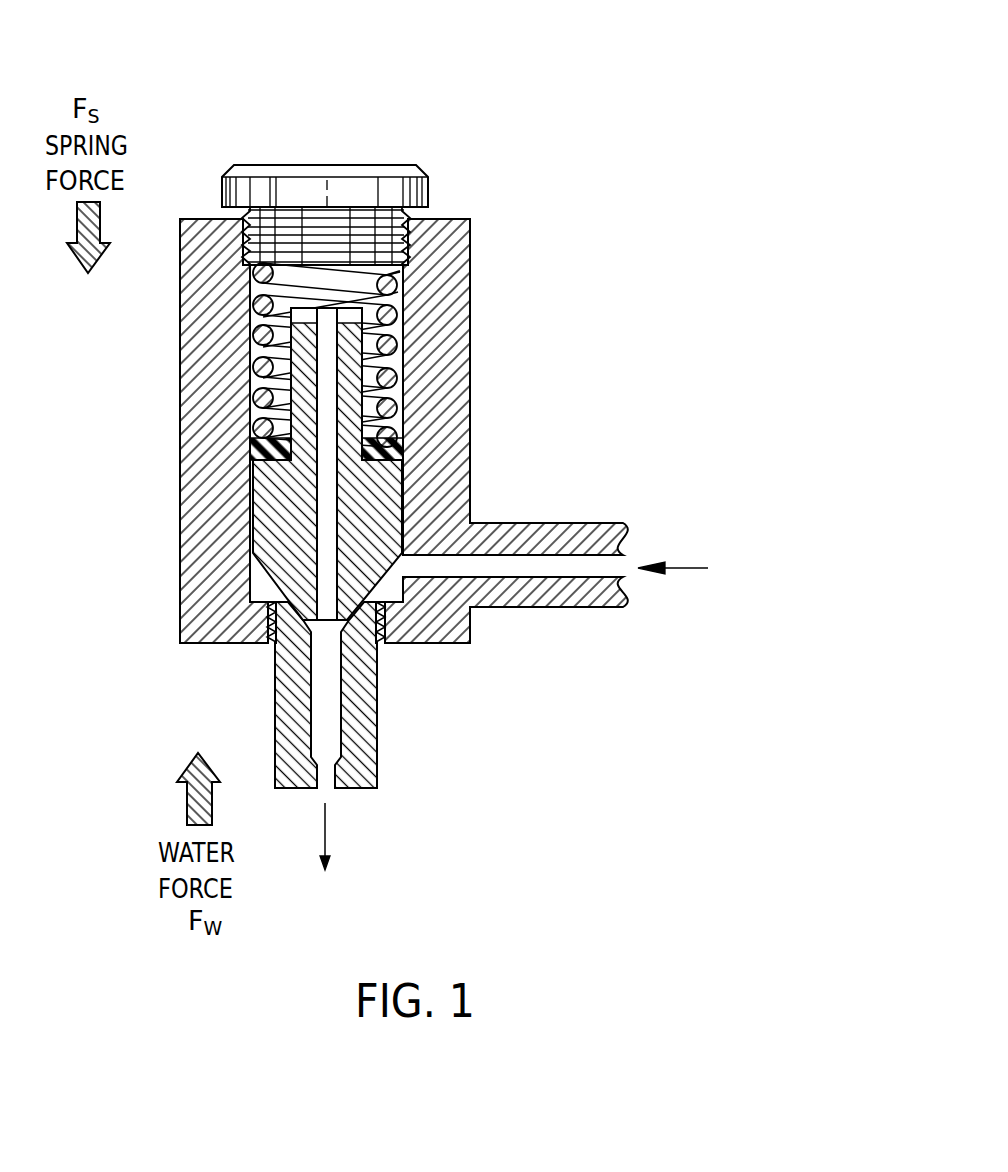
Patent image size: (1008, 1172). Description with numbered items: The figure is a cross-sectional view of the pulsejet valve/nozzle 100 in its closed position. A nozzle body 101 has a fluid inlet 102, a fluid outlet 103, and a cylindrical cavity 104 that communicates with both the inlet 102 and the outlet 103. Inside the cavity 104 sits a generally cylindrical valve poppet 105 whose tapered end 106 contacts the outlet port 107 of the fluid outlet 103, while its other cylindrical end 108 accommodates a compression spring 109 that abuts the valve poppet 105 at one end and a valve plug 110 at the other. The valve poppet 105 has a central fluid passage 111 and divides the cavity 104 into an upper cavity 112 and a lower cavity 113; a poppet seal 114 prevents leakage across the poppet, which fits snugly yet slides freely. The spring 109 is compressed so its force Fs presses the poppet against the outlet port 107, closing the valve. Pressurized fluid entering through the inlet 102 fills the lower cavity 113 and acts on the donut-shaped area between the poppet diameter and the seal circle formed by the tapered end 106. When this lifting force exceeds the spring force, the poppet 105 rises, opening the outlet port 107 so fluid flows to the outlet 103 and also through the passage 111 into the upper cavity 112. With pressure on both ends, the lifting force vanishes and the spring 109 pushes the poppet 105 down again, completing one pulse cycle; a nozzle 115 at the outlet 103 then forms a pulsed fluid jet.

The pulsejet valve/nozzle 100 is at (492, 128).
The nozzle body 101 is at (453, 220).
The fluid inlet 102 is at (615, 565).
The fluid outlet 103 is at (360, 725).
The cylindrical cavity 104 is at (389, 392).
The valve poppet 105 is at (382, 500).
The tapered end 106 is at (264, 578).
The outlet port 107 is at (290, 607).
The cylindrical end 108 is at (300, 352).
The compression spring 109 is at (397, 284).
The valve plug 110 is at (331, 190).
The central fluid passage 111 is at (328, 363).
The upper cavity 112 is at (399, 271).
The lower cavity 113 is at (397, 597).
The poppet seal 114 is at (252, 443).
The nozzle 115 is at (328, 790).